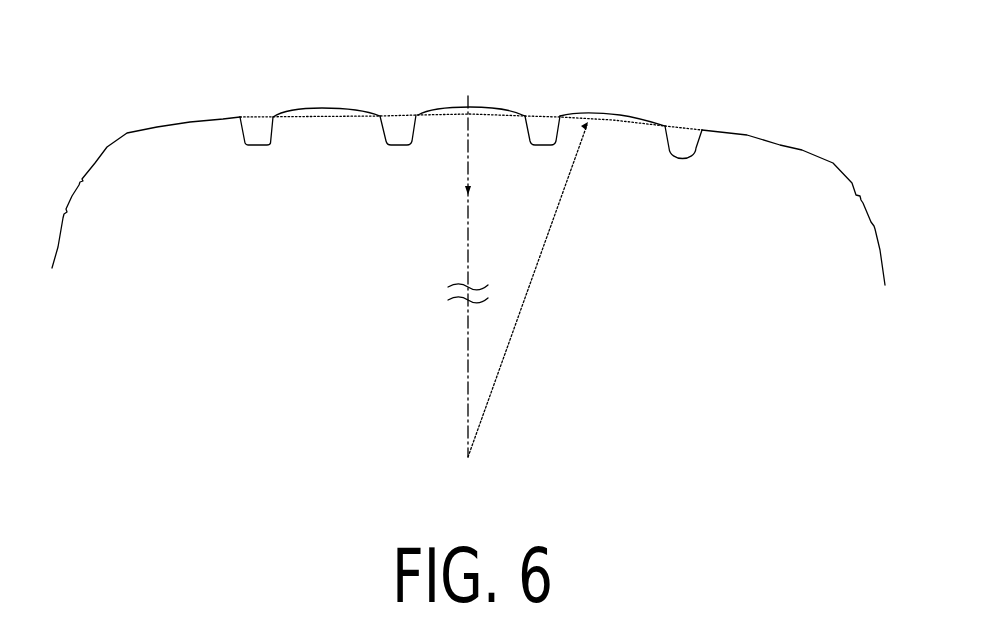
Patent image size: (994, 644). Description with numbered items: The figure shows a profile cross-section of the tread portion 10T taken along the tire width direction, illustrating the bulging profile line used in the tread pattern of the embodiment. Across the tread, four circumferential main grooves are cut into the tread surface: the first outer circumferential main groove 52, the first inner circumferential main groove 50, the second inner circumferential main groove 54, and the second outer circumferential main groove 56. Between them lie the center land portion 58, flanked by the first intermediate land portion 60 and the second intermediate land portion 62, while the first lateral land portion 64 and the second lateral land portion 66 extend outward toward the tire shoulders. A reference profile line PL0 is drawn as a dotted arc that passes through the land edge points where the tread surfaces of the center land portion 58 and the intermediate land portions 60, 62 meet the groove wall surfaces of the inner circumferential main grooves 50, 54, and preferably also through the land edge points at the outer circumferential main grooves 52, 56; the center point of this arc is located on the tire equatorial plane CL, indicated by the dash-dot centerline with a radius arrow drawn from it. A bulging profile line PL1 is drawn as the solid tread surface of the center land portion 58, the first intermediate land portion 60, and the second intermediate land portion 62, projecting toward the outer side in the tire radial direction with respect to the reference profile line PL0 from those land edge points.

The tread portion 10T is at (846, 124).
The first inner circumferential main groove 50 is at (400, 137).
The first outer circumferential main groove 52 is at (258, 122).
The second inner circumferential main groove 54 is at (542, 137).
The second outer circumferential main groove 56 is at (687, 137).
The center land portion 58 is at (499, 96).
The first intermediate land portion 60 is at (349, 98).
The second intermediate land portion 62 is at (591, 112).
The first lateral land portion 64 is at (211, 100).
The second lateral land portion 66 is at (742, 126).
The bulging profile line PL1 is at (330, 110).
The reference profile line PL0 is at (323, 118).
The tire equatorial plane CL is at (518, 261).